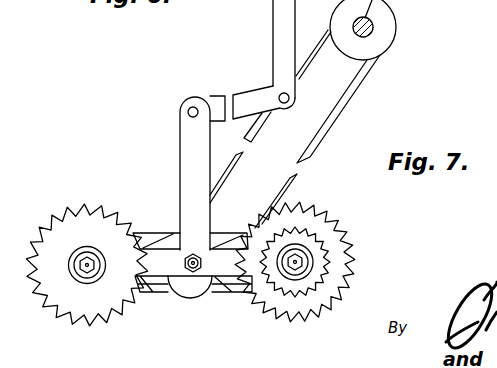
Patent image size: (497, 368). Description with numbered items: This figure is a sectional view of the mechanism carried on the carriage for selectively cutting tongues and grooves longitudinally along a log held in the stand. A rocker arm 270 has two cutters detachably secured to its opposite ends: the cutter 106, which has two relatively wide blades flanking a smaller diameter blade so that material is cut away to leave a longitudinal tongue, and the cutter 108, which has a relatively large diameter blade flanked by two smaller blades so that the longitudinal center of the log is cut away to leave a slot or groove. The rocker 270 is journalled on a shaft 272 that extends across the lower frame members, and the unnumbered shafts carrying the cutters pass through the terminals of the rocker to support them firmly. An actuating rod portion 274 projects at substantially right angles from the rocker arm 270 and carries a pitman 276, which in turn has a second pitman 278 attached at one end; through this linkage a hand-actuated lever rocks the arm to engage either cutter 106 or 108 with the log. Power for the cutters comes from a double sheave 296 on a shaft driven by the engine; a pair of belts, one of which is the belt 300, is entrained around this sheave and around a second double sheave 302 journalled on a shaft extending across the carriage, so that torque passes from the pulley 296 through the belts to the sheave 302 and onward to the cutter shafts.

The cutter 106 is at (327, 294).
The cutter 108 is at (56, 212).
The rocker arm 270 is at (157, 270).
The shaft 272 is at (202, 277).
The actuating rod portion 274 is at (187, 148).
The pitman 276 is at (252, 100).
The second pitman 278 is at (276, 24).
The double sheave 296 is at (385, 28).
The belt 300 is at (362, 78).
The double sheave 302 is at (195, 278).